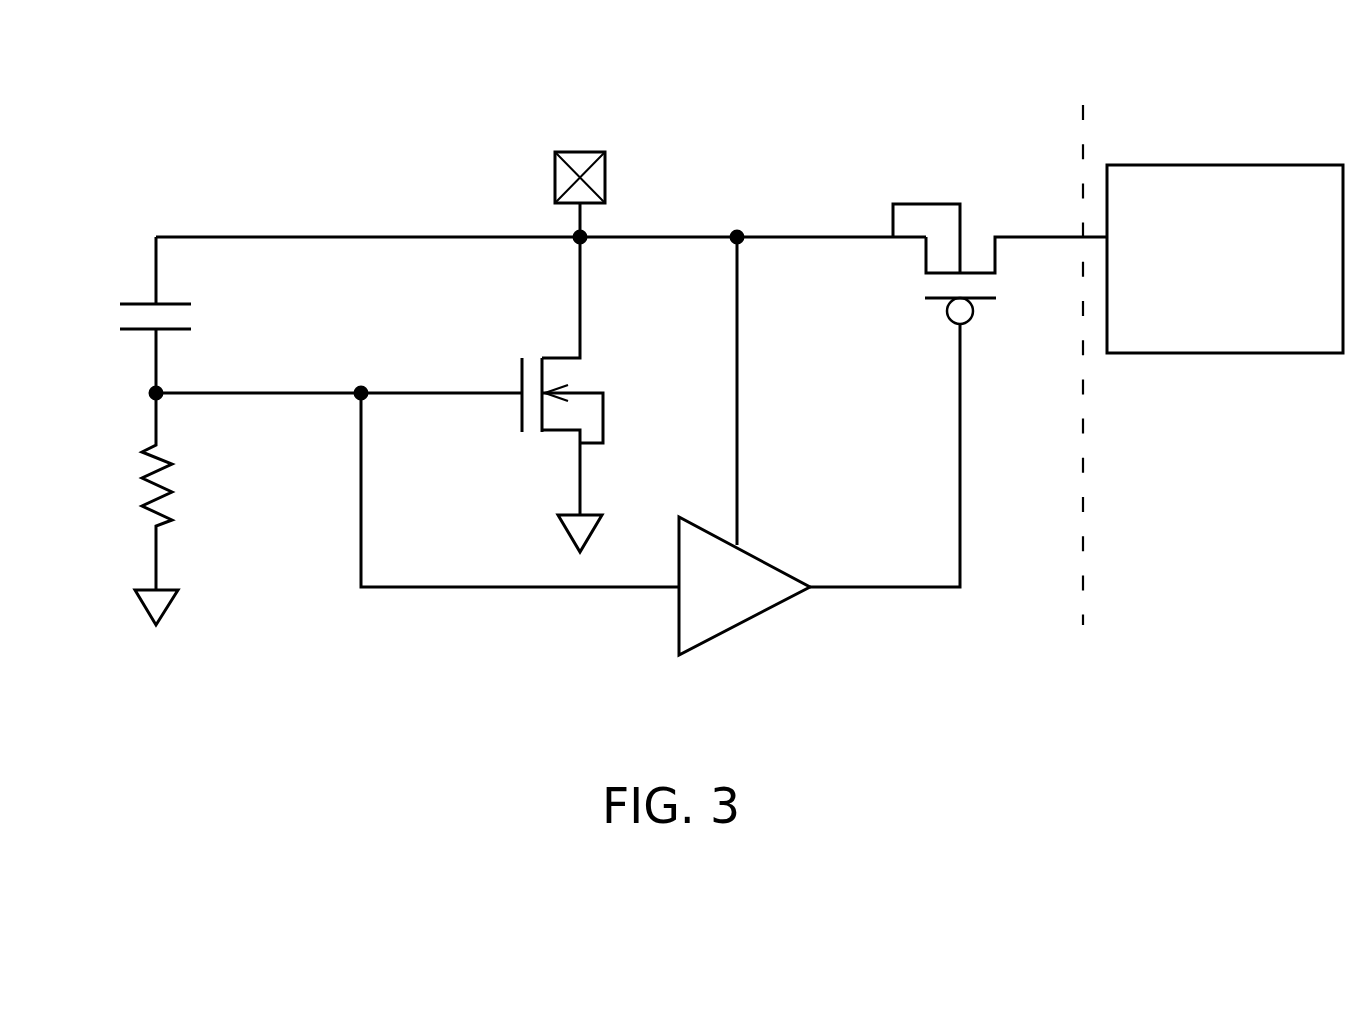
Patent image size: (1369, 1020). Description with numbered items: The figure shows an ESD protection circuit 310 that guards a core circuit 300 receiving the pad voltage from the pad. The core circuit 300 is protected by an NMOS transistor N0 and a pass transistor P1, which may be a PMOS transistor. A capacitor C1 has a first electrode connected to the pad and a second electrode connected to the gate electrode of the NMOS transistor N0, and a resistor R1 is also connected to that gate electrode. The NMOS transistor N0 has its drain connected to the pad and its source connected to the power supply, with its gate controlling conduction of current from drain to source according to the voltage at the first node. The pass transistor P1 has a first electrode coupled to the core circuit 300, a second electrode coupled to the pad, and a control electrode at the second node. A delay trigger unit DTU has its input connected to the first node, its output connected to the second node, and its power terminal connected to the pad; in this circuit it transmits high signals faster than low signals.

The ESD protection circuit 310 is at (594, 355).
The core circuit 300 is at (1252, 280).
The capacitor C1 is at (136, 315).
The resistor R1 is at (130, 491).
The NMOS transistor N0 is at (540, 376).
The pass transistor P1 is at (978, 258).
The delay trigger unit DTU is at (744, 586).